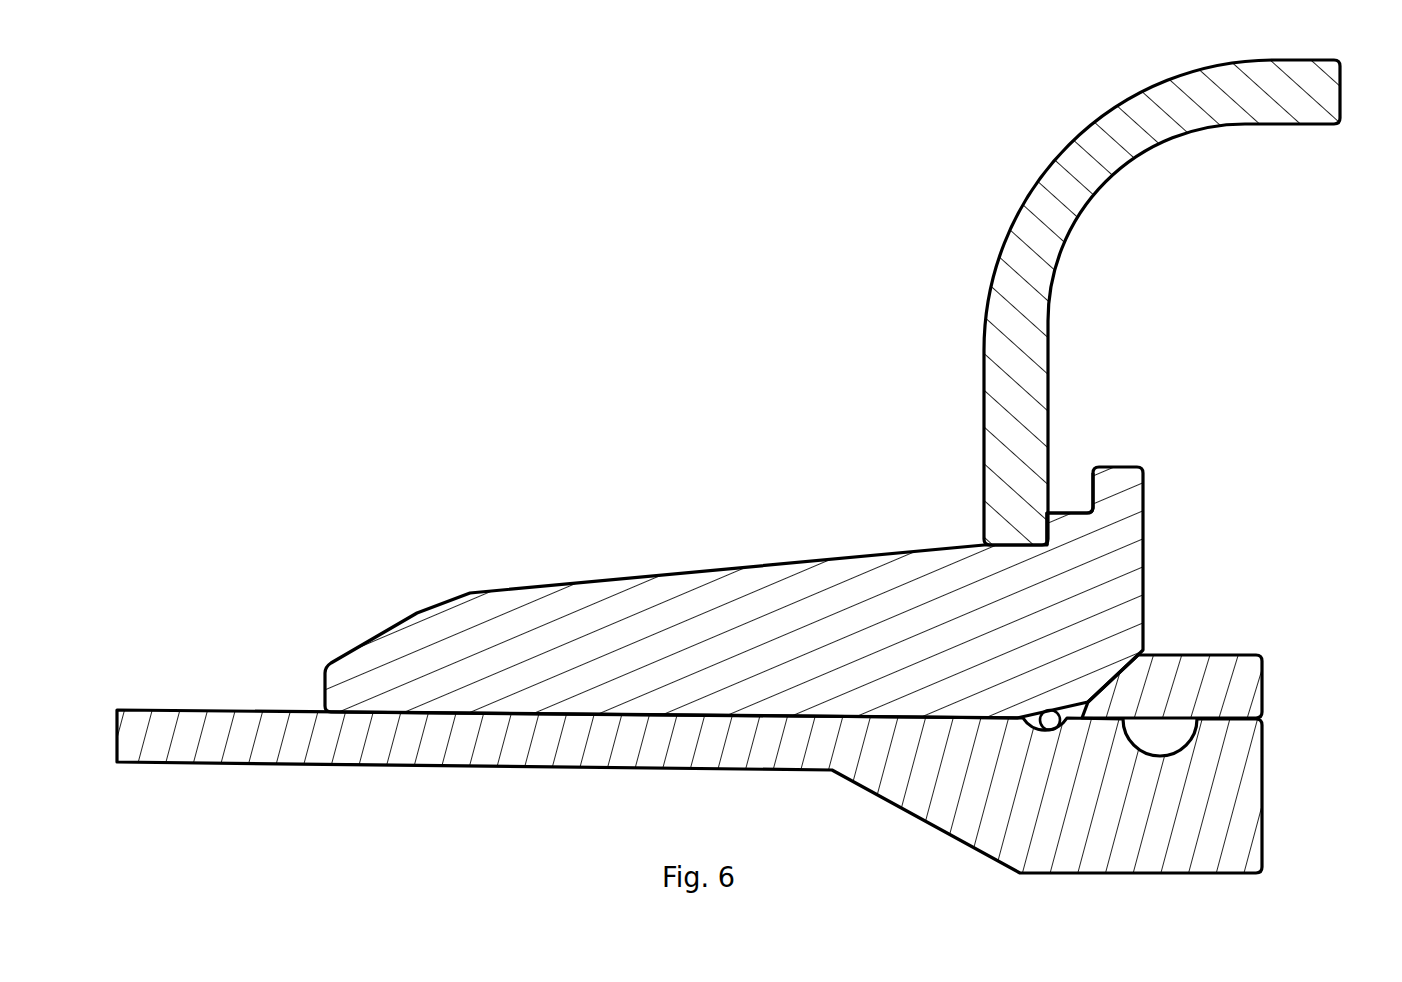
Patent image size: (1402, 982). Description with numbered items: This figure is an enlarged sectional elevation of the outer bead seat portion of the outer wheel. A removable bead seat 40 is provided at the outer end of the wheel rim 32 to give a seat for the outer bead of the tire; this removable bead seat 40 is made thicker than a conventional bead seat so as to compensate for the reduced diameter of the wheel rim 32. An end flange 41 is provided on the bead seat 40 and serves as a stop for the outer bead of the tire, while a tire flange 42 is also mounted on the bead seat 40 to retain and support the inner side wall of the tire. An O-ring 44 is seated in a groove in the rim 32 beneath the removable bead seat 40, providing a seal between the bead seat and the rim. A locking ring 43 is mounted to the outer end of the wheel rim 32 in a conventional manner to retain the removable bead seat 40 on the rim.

The wheel rim 32 is at (1275, 793).
The removable bead seat 40 is at (652, 572).
The end flange 41 is at (1068, 512).
The tire flange 42 is at (983, 307).
The locking ring 43 is at (1272, 660).
The O-ring 44 is at (1058, 711).